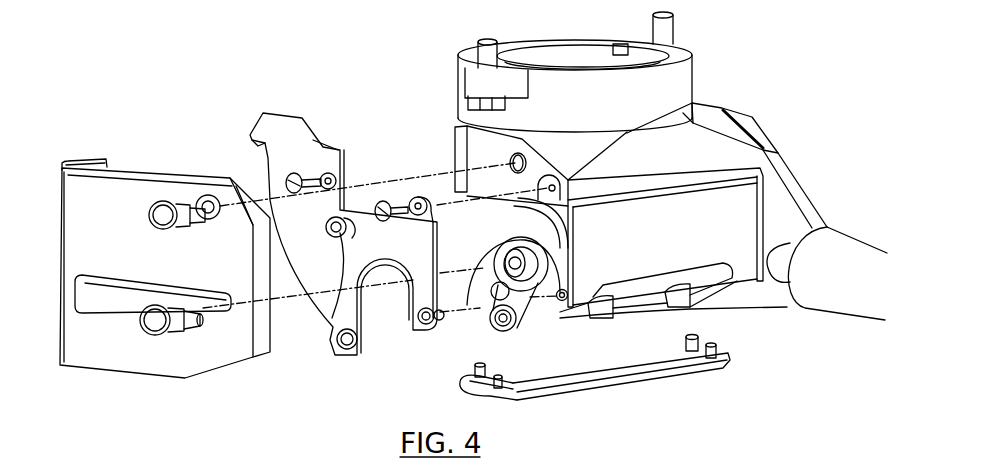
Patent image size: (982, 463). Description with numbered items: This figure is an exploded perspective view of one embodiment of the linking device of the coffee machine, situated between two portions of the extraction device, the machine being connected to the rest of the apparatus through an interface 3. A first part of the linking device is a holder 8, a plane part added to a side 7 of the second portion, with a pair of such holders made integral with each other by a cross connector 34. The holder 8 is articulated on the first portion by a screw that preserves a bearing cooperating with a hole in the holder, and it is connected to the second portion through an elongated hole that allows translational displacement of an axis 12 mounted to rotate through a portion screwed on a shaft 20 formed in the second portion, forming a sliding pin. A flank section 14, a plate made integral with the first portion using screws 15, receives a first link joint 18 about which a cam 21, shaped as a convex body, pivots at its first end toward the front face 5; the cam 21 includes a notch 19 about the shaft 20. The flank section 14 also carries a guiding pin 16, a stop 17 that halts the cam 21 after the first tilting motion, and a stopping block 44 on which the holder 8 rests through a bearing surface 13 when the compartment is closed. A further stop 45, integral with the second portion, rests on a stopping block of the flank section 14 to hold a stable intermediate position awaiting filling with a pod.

The interface 3 is at (674, 92).
The front face 5 is at (742, 249).
The side 7 is at (504, 210).
The holder 8 is at (210, 348).
The axis 12 is at (155, 322).
The bearing surface 13 is at (88, 161).
The flank section 14 is at (318, 221).
The screws 15 is at (410, 200).
The guiding pin 16 is at (337, 245).
The stop 17 is at (343, 347).
The first link joint 18 is at (428, 339).
The notch 19 is at (388, 298).
The shaft 20 is at (541, 272).
The cam 21 is at (490, 300).
The cross connector 34 is at (594, 385).
The stopping block 44 is at (258, 138).
The stop 45 is at (516, 331).